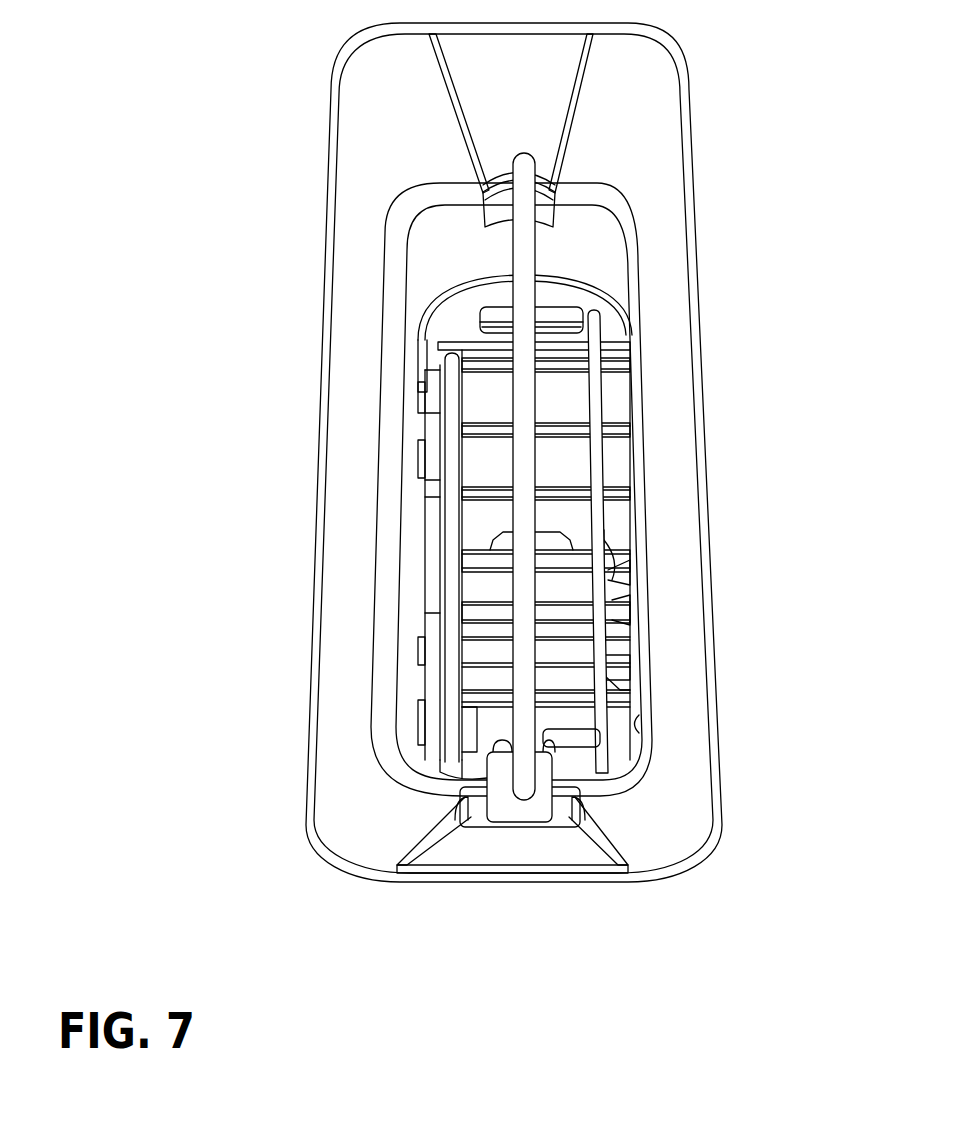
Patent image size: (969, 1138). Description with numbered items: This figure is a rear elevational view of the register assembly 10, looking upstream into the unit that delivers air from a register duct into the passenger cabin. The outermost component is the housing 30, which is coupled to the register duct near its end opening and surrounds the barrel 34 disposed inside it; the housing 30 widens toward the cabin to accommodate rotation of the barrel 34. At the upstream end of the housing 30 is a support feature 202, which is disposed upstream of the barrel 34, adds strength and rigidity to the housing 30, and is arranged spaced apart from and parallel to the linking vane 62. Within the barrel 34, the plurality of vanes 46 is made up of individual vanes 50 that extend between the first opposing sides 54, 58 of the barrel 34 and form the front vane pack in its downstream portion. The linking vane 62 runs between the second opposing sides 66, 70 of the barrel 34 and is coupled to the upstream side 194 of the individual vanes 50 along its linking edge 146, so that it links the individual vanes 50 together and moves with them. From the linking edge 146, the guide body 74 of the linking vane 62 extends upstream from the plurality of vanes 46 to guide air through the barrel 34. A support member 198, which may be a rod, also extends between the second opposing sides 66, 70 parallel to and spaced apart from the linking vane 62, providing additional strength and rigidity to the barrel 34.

The register assembly 10 is at (733, 137).
The housing 30 is at (670, 408).
The barrel 34 is at (628, 336).
The support feature 202 is at (527, 245).
The second opposing side 66 is at (478, 352).
The first opposing side 54 is at (425, 487).
The linking vane 62 is at (467, 548).
The individual vanes 50 is at (570, 630).
The plurality of vanes 46 is at (628, 668).
The upstream side 194 is at (560, 560).
The support member 198 is at (597, 470).
The first opposing side 58 is at (640, 726).
The linking edge 146 is at (470, 670).
The guide body 74 is at (463, 743).
The second opposing side 70 is at (583, 782).